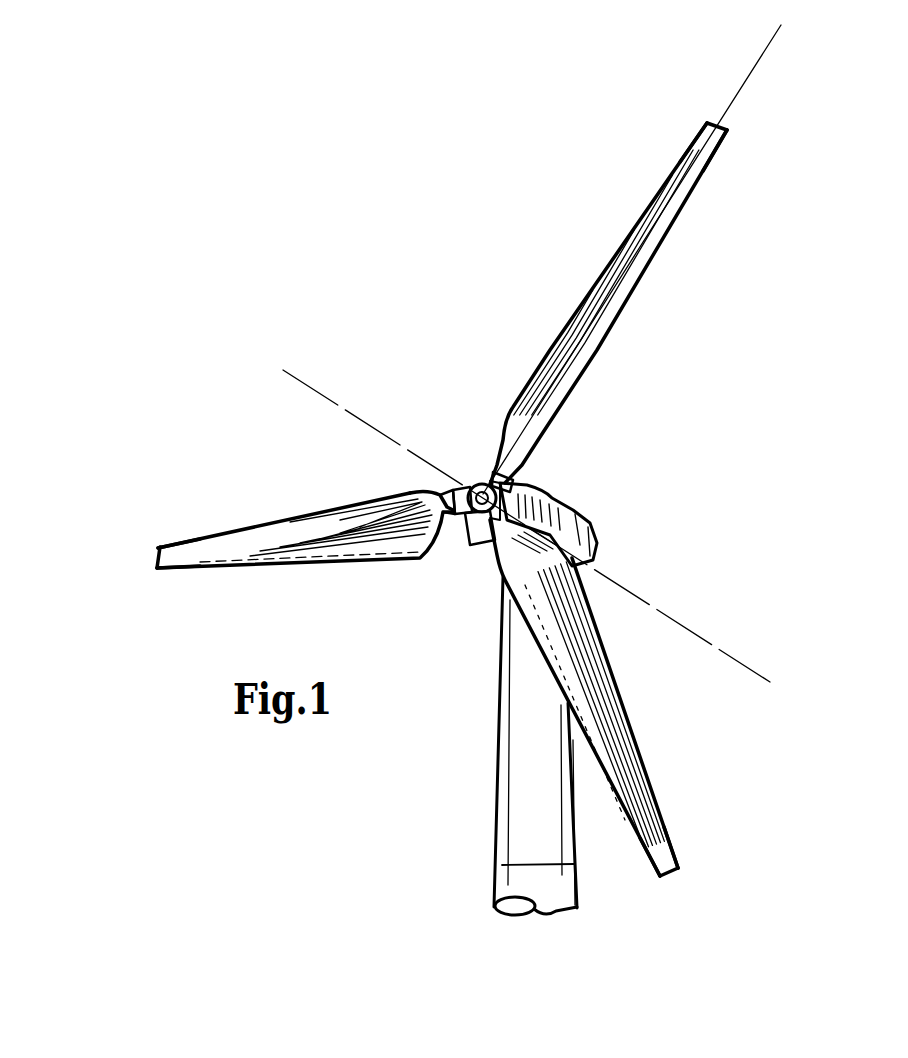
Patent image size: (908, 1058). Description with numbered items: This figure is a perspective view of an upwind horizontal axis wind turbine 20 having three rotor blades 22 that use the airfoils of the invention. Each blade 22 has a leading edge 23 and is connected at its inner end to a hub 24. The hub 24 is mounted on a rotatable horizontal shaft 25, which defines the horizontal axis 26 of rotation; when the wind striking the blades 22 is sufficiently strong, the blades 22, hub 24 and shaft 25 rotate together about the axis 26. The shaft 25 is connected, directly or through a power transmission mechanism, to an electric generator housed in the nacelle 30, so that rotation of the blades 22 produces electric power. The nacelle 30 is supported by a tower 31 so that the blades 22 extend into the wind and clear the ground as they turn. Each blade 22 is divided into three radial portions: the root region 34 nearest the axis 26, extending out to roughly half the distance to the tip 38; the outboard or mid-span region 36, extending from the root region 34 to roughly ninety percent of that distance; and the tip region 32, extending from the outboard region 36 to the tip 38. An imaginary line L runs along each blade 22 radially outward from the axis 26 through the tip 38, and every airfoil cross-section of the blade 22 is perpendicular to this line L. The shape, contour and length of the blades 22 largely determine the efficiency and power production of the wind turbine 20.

The horizontal axis wind turbine 20 is at (742, 421).
The rotor blade 22 is at (459, 508).
The leading edge 23 is at (667, 248).
The hub 24 is at (507, 483).
The rotatable horizontal shaft 25 is at (481, 489).
The horizontal axis of rotation 26 is at (340, 403).
The nacelle 30 is at (588, 520).
The tower 31 is at (500, 796).
The tip region 32 is at (723, 145).
The root region 34 is at (540, 453).
The outboard or mid-span region 36 is at (633, 300).
The tip 38 is at (712, 122).
The imaginary line L is at (582, 343).